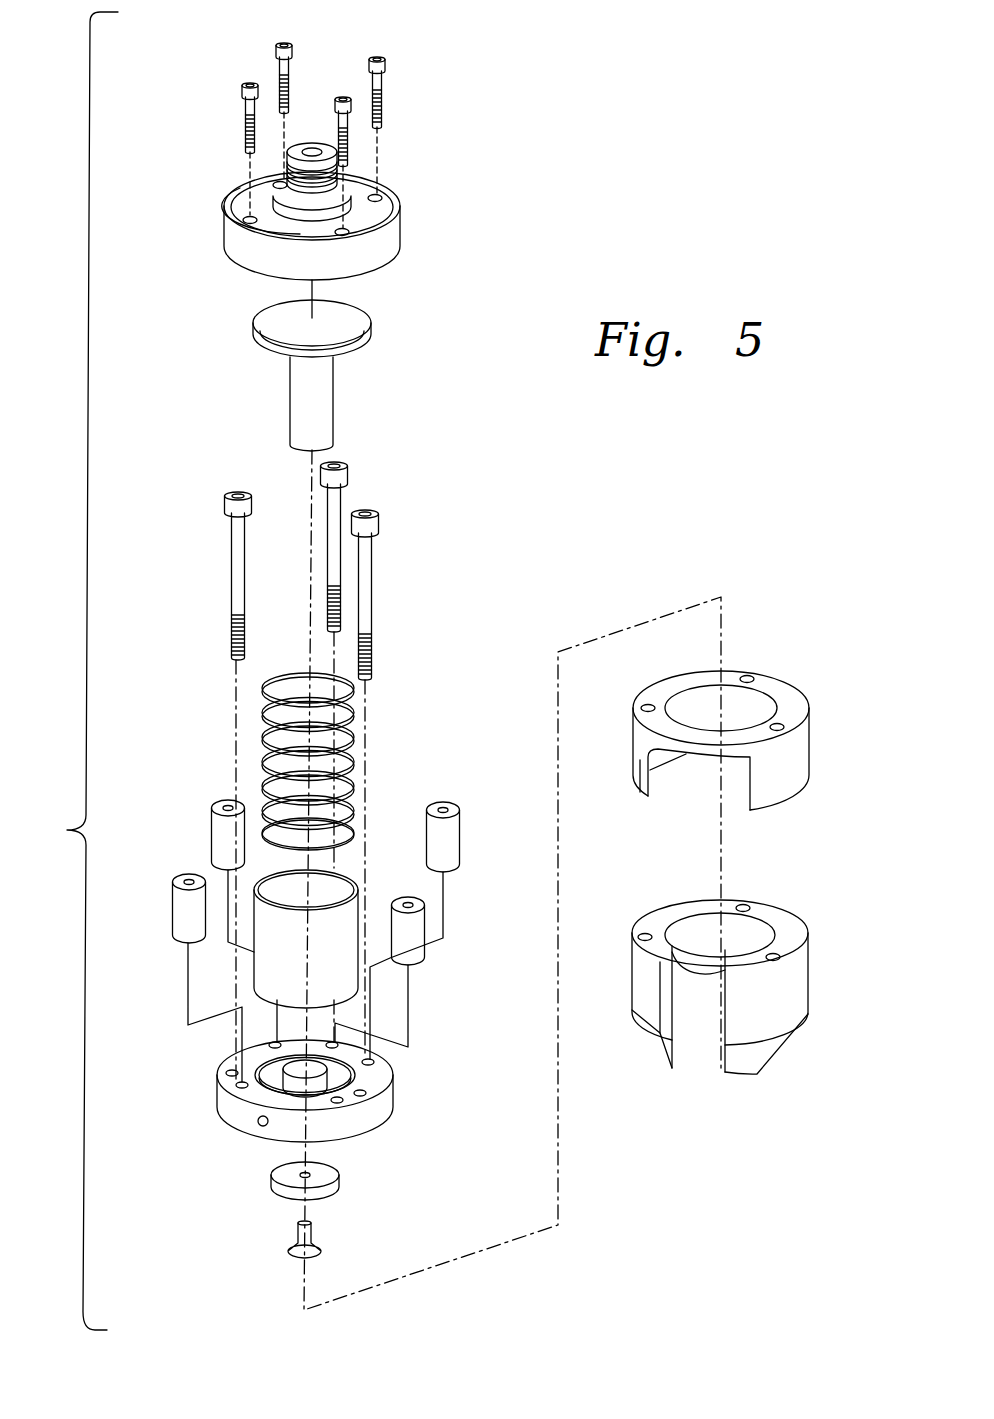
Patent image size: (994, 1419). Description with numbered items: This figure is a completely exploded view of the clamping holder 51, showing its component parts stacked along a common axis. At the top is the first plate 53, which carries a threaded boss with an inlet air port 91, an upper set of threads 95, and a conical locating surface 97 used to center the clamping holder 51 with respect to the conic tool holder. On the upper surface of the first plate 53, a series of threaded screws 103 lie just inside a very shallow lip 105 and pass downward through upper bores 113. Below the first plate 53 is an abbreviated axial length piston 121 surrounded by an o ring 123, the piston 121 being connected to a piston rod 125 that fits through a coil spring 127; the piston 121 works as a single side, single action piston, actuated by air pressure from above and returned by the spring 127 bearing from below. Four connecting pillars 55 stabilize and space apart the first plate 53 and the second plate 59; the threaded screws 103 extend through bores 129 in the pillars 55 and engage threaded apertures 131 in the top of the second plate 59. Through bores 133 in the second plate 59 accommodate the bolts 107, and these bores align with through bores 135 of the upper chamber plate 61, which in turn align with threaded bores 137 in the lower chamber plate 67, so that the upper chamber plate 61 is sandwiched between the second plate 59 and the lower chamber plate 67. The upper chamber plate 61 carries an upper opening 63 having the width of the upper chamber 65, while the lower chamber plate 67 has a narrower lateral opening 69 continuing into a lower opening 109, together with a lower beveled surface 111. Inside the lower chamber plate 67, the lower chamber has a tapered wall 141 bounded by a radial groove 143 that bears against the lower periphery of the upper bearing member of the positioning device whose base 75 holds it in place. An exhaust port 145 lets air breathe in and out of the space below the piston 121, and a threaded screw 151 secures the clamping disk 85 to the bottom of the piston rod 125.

The clamping holder 51 is at (75, 671).
The first plate 53 is at (390, 248).
The connecting pillars 55 is at (212, 822).
The second plate 59 is at (342, 1128).
The upper chamber plate 61 is at (736, 733).
The upper opening 63 is at (655, 778).
The upper chamber 65 is at (648, 762).
The lower chamber plate 67 is at (727, 977).
The lateral opening 69 is at (660, 1000).
The base 75 is at (272, 965).
The clamping disk 85 is at (330, 1190).
The inlet air port 91 is at (312, 148).
The upper set of threads 95 is at (243, 186).
The conical locating surface 97 is at (288, 192).
The threaded screws 103 is at (251, 83).
The shallow lip 105 is at (398, 203).
The bolt head 107 is at (236, 491).
The lower opening 109 is at (695, 1040).
The lower beveled surface 111 is at (780, 1044).
The upper bores 113 is at (244, 222).
The piston 121 is at (350, 310).
The o ring 123 is at (362, 347).
The piston rod 125 is at (334, 405).
The coil spring 127 is at (355, 722).
The bores 129 is at (228, 806).
The threaded apertures 131 is at (270, 1044).
The through bores 133 is at (227, 1072).
The through bores 135 is at (648, 704).
The threaded bores 137 is at (645, 933).
The tapered wall 141 is at (683, 935).
The radial groove 143 is at (748, 946).
The exhaust port 145 is at (261, 1125).
The threaded screw 151 is at (319, 1254).